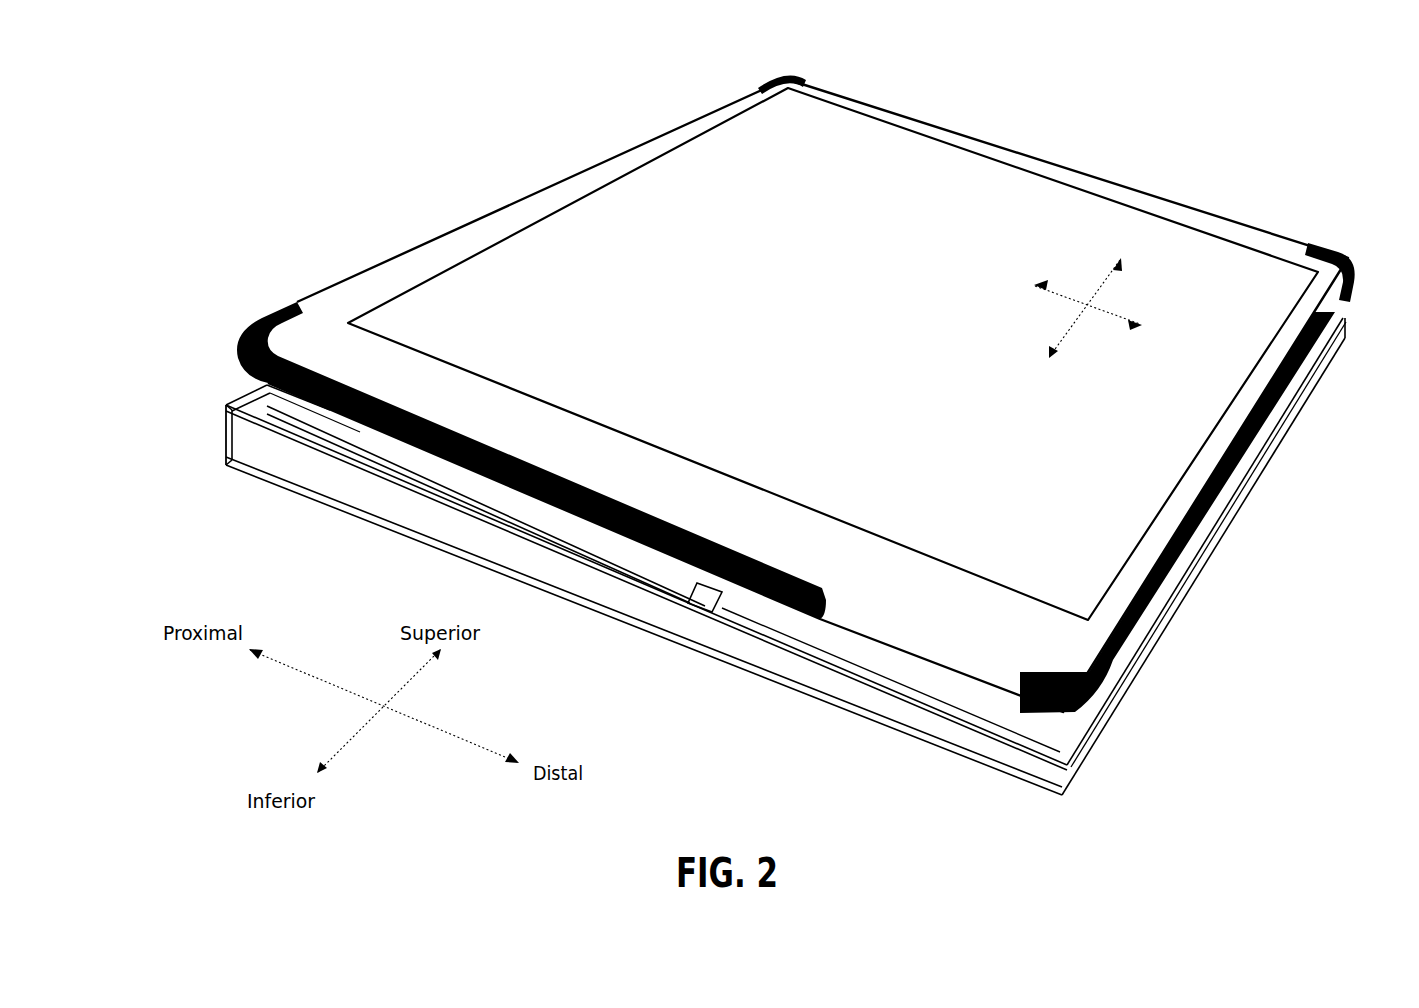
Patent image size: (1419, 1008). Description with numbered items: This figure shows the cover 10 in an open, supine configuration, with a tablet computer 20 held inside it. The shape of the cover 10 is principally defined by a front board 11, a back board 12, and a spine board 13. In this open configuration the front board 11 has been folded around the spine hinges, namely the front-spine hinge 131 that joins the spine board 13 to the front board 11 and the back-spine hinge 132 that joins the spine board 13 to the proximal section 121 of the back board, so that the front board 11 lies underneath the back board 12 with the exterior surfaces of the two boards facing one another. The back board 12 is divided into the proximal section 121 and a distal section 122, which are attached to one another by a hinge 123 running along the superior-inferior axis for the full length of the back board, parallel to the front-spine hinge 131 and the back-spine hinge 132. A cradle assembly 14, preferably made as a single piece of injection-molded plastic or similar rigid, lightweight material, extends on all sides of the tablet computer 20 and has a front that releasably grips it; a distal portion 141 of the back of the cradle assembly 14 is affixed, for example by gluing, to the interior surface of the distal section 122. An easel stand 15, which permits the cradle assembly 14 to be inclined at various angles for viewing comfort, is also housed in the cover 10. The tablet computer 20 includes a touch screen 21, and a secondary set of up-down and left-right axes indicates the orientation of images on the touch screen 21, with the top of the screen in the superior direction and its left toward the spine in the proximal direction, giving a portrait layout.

The cover 10 is at (1258, 108).
The front board 11 is at (905, 742).
The back board 12 is at (593, 584).
The proximal section 121 is at (652, 598).
The distal section 122 is at (815, 692).
The hinge 123 is at (726, 597).
The spine board 13 is at (222, 437).
The front-spine hinge 131 is at (222, 466).
The back-spine hinge 132 is at (222, 402).
The cradle assembly 14 is at (768, 80).
The distal portion 141 is at (1232, 502).
The easel stand 15 is at (352, 470).
The tablet computer 20 is at (1062, 160).
The touch screen 21 is at (833, 354).